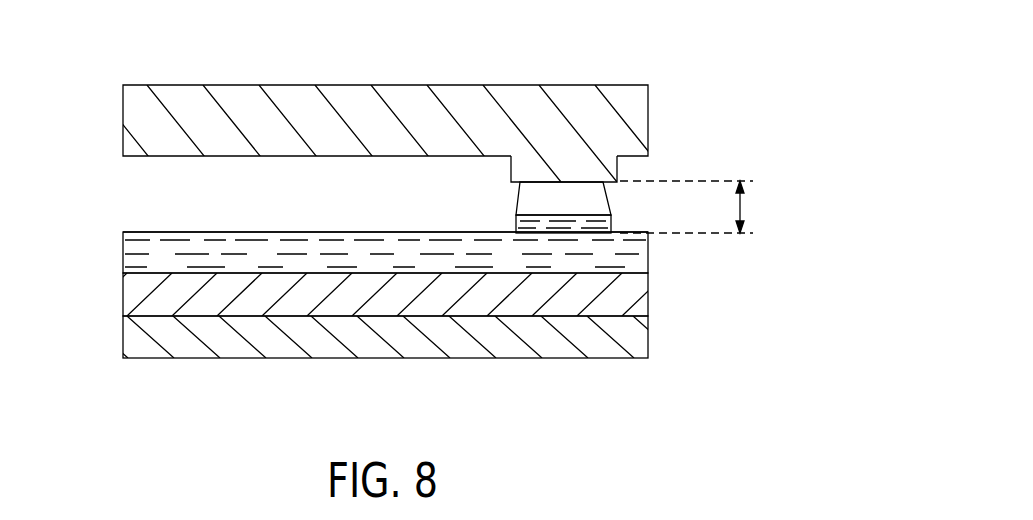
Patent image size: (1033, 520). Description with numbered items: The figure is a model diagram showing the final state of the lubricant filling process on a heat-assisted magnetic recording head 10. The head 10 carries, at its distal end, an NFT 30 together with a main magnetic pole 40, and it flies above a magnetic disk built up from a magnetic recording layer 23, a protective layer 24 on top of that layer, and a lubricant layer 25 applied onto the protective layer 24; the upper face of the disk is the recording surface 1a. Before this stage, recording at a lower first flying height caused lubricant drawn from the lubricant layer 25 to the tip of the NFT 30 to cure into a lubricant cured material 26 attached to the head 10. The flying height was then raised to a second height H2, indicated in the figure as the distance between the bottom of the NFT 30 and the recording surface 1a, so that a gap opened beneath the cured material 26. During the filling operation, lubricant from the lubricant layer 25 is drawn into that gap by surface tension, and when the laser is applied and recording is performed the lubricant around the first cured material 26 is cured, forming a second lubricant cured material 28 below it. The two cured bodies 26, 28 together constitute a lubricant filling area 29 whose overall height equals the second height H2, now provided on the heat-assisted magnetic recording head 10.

The heat-assisted magnetic recording head 10 is at (593, 70).
The main magnetic pole 40 is at (127, 125).
The NFT 30 is at (513, 170).
The recording surface 1a is at (270, 232).
The lubricant layer 25 is at (125, 255).
The protective layer 24 is at (125, 300).
The magnetic recording layer 23 is at (125, 343).
The lubricant cured material 26 is at (536, 202).
The lubricant cured material 28 is at (586, 225).
The lubricant filling area 29 is at (557, 322).
The second height H2 is at (740, 207).